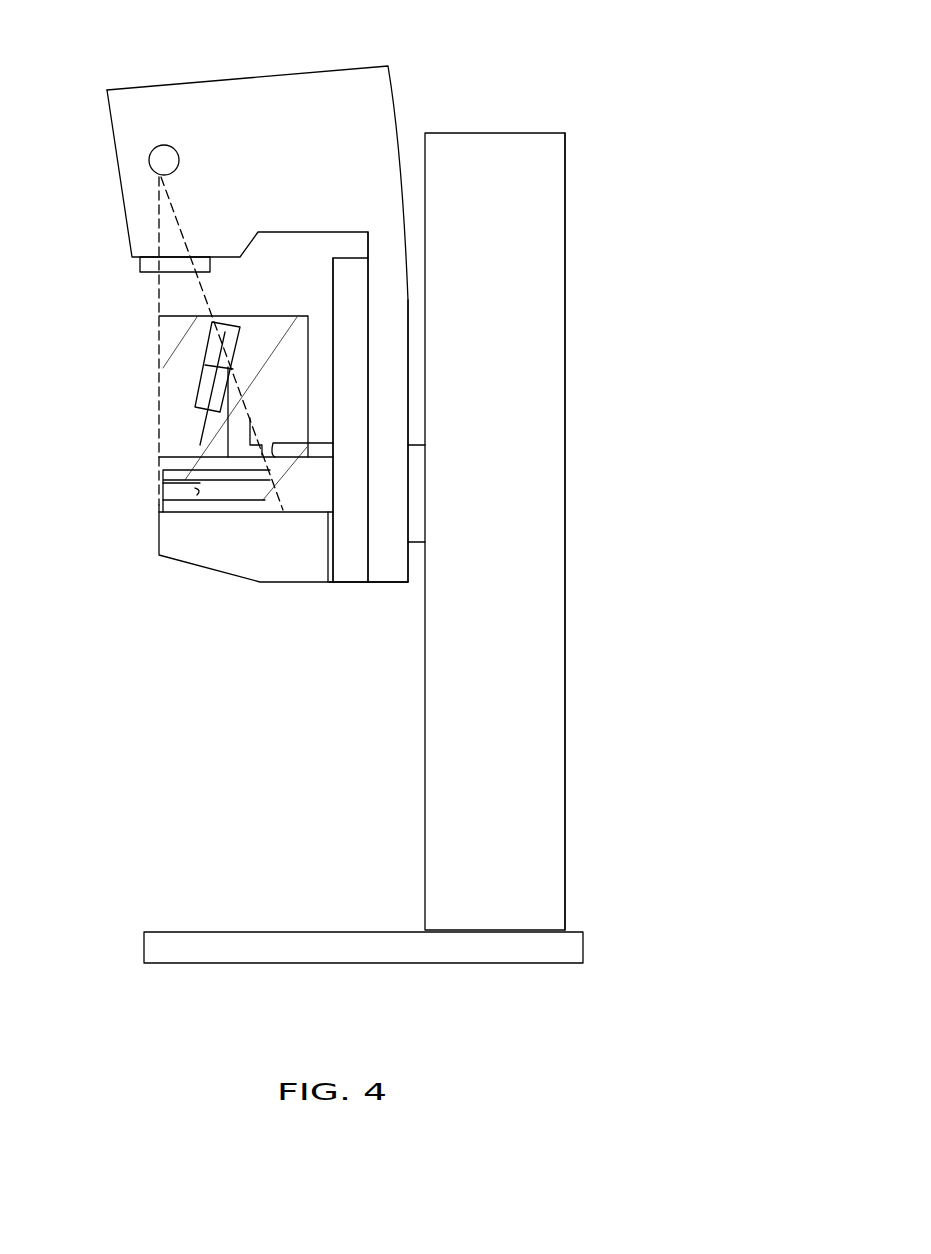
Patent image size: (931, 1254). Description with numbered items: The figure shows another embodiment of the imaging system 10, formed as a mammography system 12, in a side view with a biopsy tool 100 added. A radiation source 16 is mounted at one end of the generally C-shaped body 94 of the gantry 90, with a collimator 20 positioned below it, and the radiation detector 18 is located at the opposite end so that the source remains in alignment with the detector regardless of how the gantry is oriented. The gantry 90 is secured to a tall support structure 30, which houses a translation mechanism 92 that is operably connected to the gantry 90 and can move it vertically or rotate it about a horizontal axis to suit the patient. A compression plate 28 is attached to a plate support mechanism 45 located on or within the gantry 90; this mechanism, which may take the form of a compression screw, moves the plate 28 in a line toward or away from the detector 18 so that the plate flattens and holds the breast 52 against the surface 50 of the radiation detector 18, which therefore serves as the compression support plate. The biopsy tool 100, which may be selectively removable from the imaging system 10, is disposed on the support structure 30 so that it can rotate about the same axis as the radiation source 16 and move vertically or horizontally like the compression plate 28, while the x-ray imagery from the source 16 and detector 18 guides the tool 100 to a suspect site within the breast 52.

The imaging system 10 is at (150, 59).
The mammography system 12 is at (562, 108).
The radiation source 16 is at (150, 158).
The radiation detector 18 is at (208, 568).
The collimator 20 is at (140, 263).
The compression plate 28 is at (150, 517).
The support structure 30 is at (566, 533).
The plate support mechanism 45 is at (353, 572).
The surface 50 is at (190, 495).
The breast 52 is at (175, 512).
The gantry 90 is at (346, 98).
The translation mechanism 92 is at (427, 492).
The C-shaped body 94 is at (410, 298).
The biopsy tool 100 is at (212, 337).